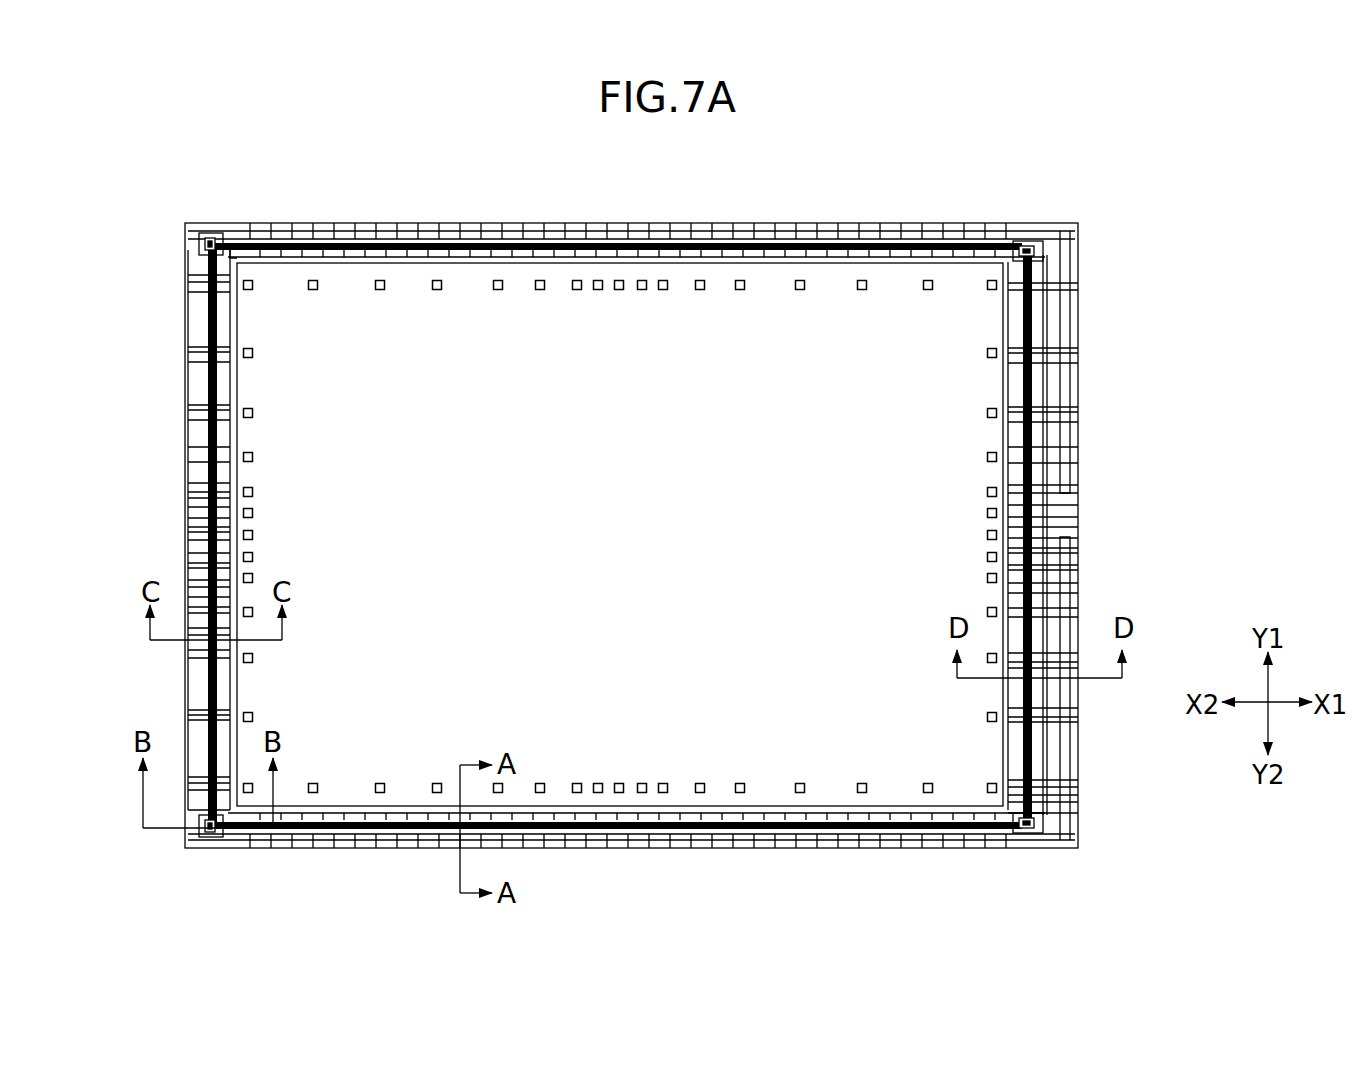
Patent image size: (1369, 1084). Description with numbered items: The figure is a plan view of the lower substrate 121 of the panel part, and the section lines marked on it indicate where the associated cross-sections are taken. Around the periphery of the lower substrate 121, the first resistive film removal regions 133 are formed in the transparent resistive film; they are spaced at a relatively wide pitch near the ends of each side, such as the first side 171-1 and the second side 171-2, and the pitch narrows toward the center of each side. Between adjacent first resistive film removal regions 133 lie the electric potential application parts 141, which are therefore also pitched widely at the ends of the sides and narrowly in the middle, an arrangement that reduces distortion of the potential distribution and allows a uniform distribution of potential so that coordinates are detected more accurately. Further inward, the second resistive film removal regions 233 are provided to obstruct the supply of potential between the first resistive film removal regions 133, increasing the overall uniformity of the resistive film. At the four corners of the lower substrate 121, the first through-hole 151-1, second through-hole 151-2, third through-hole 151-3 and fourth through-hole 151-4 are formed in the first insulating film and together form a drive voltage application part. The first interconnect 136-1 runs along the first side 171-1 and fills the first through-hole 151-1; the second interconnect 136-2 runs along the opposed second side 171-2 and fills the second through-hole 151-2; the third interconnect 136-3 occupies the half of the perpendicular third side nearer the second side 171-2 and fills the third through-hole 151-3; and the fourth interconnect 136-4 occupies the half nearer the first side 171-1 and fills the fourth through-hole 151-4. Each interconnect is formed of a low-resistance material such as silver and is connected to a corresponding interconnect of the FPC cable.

The lower substrate 121 is at (218, 222).
The first resistive film removal regions 133 is at (226, 470).
The first interconnect 136-1 is at (945, 848).
The second interconnect 136-2 is at (680, 232).
The third interconnect 136-3 is at (1055, 462).
The fourth interconnect 136-4 is at (1066, 596).
The electric potential application parts 141 is at (381, 262).
The first through-hole 151-1 is at (205, 830).
The second through-hole 151-2 is at (203, 244).
The third through-hole 151-3 is at (1036, 251).
The fourth through-hole 151-4 is at (1036, 823).
The first side 171-1 is at (700, 851).
The second side 171-2 is at (497, 222).
The second resistive film removal regions 233 is at (985, 535).